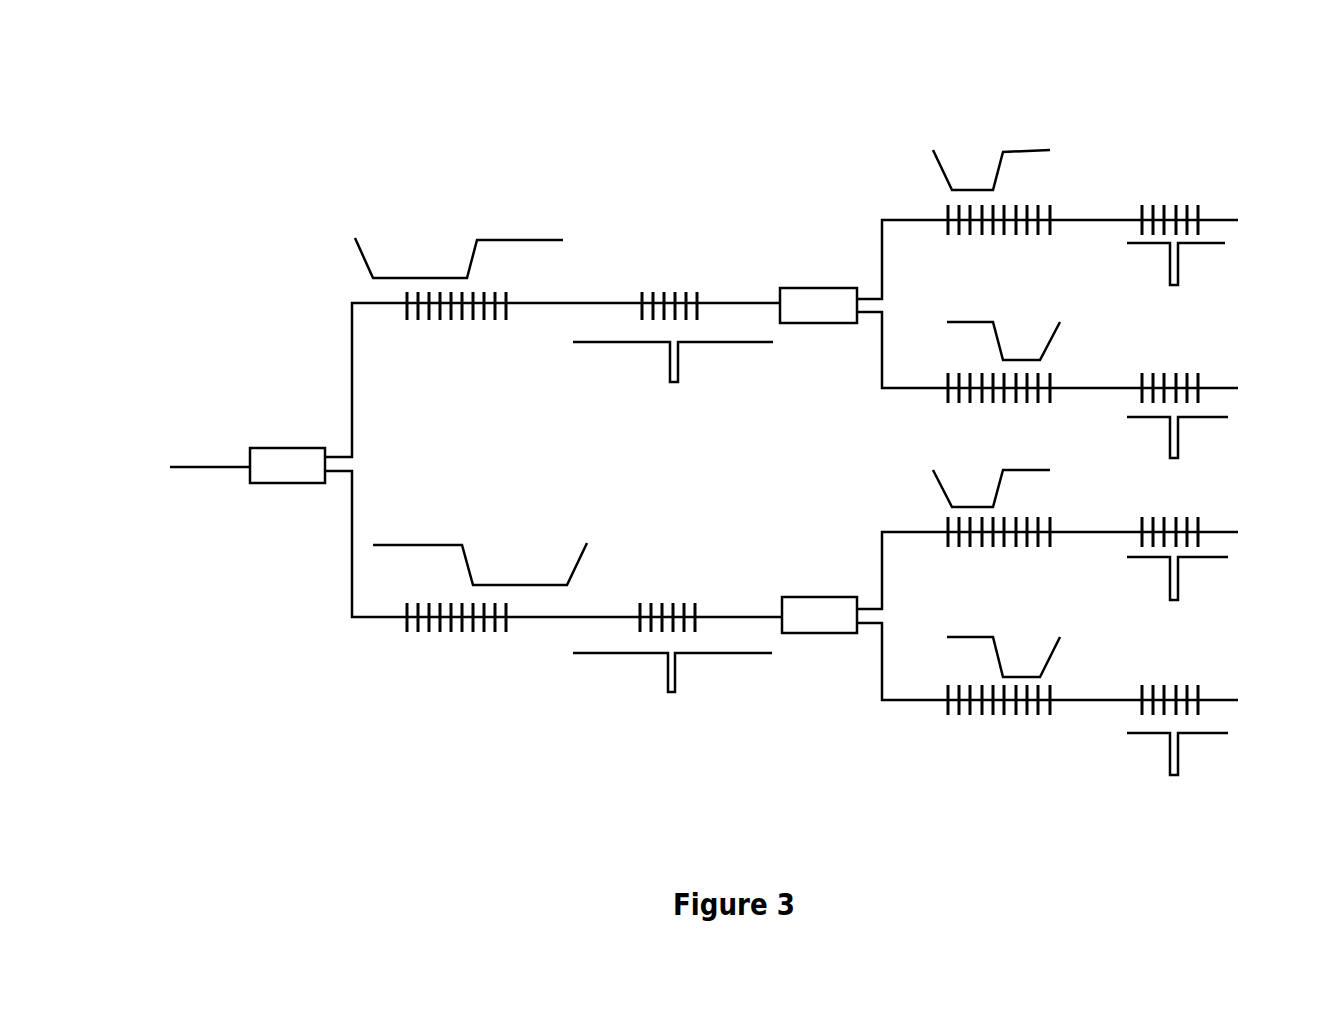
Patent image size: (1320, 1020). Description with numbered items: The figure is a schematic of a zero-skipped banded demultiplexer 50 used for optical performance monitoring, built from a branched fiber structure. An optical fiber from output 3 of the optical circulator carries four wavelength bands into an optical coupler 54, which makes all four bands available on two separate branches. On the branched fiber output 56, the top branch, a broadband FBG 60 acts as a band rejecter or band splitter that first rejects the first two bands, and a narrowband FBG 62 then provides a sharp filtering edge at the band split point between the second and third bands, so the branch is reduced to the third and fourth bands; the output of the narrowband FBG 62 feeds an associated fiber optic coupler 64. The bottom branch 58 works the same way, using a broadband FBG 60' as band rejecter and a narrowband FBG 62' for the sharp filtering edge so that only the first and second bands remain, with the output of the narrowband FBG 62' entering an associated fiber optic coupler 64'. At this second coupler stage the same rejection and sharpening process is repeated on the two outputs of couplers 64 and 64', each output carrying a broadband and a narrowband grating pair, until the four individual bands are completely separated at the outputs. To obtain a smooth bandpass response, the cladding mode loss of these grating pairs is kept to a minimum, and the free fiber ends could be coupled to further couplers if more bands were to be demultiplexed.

The zero-skipped banded demultiplexer 50 is at (641, 76).
The output of the optical circulator 3 is at (177, 477).
The optical coupler 54 is at (243, 480).
The branched fiber output 56 is at (360, 440).
The bottom branch 58 is at (362, 532).
The broadband FBG 60 is at (455, 330).
The broadband FBG 60' is at (456, 648).
The narrowband FBG 62 is at (669, 271).
The narrowband FBG 62' is at (667, 587).
The fiber optic coupler 64 is at (818, 272).
The fiber optic coupler 64' is at (819, 581).